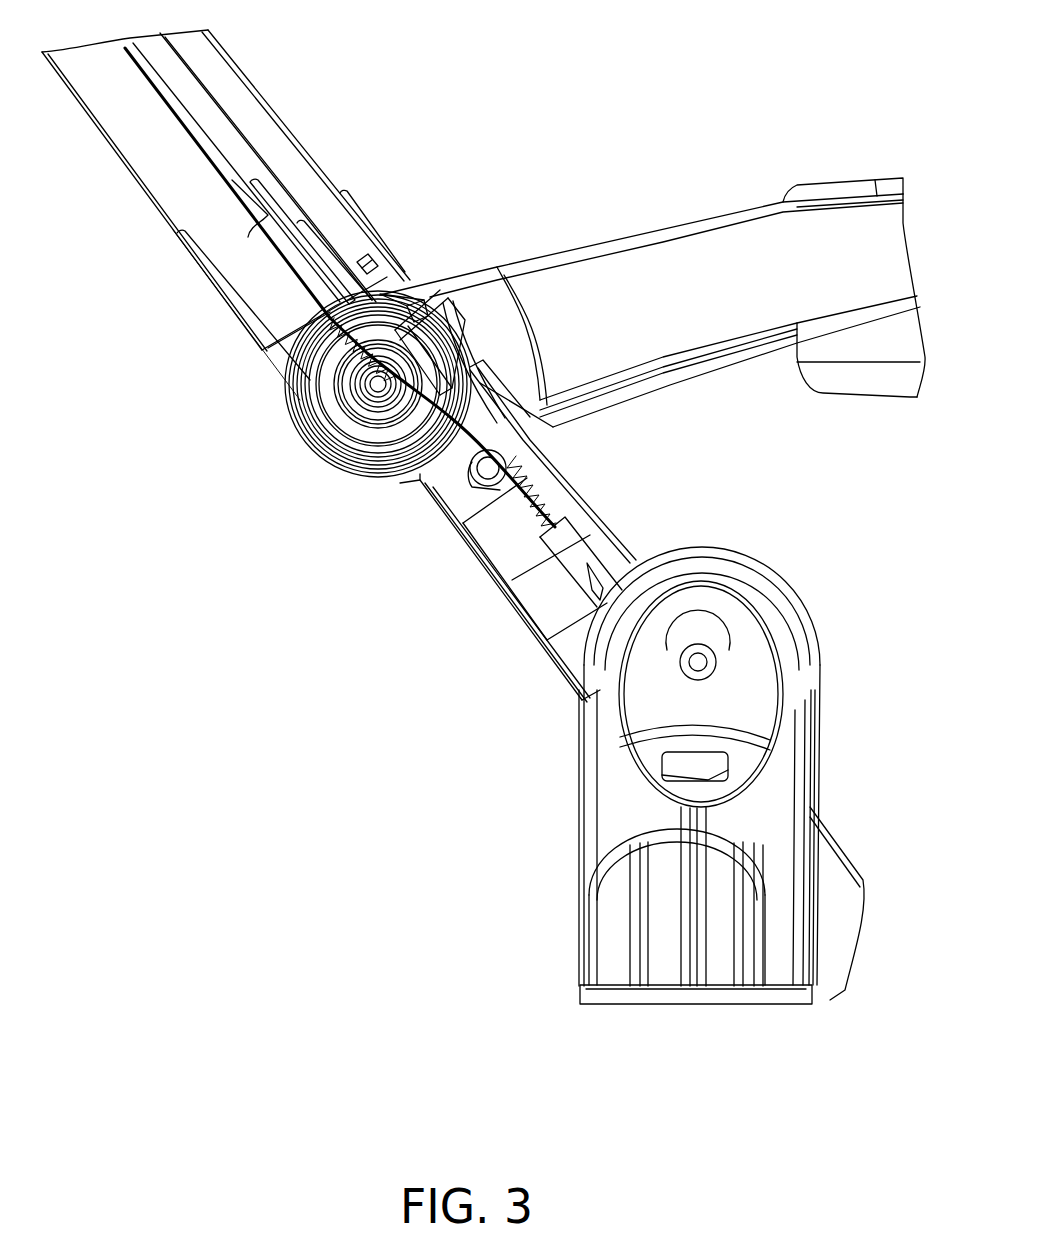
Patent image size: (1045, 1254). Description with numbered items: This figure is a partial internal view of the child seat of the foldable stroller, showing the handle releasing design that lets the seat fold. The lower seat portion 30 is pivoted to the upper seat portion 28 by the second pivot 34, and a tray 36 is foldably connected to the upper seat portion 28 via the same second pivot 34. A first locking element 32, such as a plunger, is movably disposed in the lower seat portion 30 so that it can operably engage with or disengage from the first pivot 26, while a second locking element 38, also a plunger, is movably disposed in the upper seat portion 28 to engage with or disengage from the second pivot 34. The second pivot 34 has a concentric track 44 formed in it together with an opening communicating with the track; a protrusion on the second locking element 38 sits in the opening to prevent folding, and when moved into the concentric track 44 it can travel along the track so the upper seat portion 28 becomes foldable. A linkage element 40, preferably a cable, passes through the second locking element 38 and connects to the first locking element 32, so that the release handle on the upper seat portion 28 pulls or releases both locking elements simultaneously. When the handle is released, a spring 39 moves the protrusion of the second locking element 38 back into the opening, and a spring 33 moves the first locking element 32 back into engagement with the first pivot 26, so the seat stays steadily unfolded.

The first pivot 26 is at (747, 637).
The upper seat portion 28 is at (118, 158).
The lower seat portion 30 is at (520, 613).
The first locking element 32 is at (567, 540).
The spring 33 is at (543, 489).
The second pivot 34 is at (310, 417).
The tray 36 is at (833, 187).
The second locking element 38 is at (424, 300).
The spring 39 is at (350, 373).
The linkage element 40 is at (240, 192).
The concentric track 44 is at (358, 422).